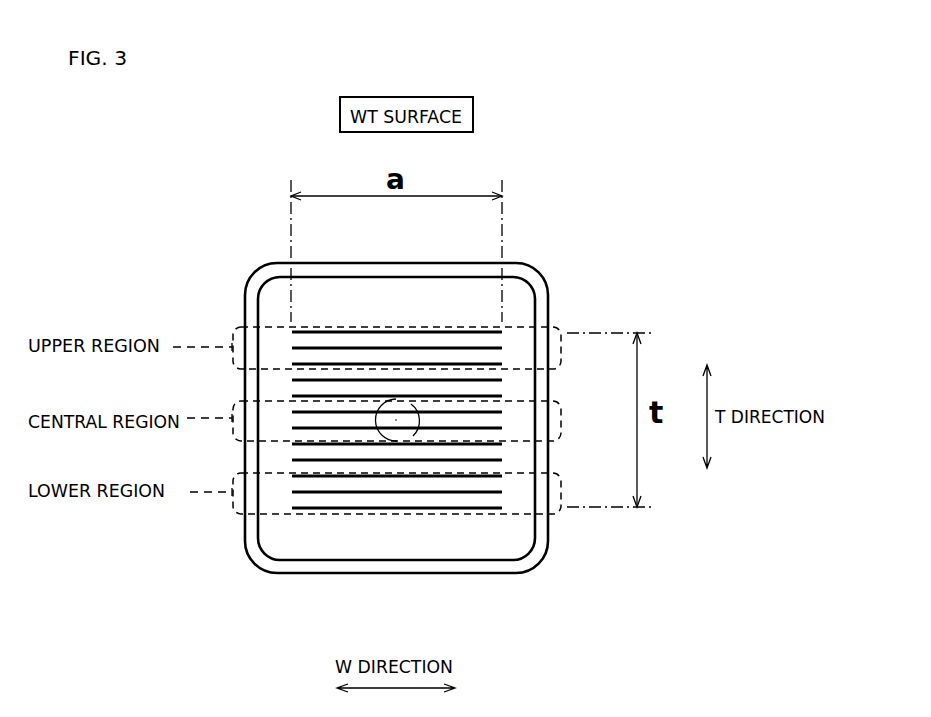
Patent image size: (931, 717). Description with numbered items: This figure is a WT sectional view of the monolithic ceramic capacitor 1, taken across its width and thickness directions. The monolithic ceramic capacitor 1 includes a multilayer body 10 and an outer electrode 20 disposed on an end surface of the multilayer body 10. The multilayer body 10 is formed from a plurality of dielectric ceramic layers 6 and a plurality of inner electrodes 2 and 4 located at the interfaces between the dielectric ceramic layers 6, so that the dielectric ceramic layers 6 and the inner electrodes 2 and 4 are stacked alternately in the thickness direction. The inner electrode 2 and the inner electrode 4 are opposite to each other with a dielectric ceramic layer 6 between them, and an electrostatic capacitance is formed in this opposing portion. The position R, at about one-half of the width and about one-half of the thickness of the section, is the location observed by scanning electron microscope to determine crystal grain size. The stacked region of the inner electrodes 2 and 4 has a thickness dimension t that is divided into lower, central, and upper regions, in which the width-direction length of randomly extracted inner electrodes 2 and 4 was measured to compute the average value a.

The monolithic ceramic capacitor 1 is at (212, 170).
The multilayer body 10 is at (267, 283).
The outer electrode 20 is at (536, 288).
The inner electrode 2 is at (302, 492).
The inner electrode 4 is at (490, 508).
The dielectric ceramic layer 6 is at (495, 340).
The position R is at (396, 441).